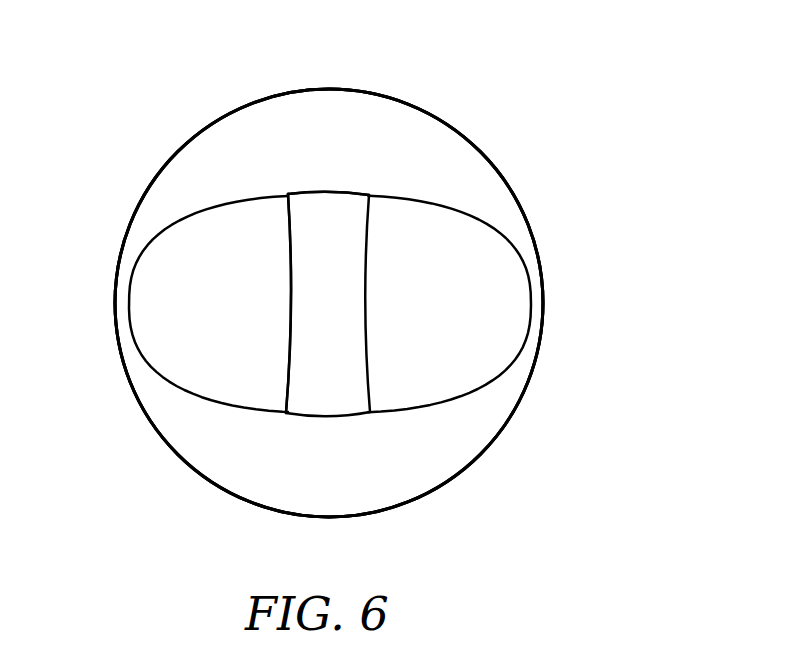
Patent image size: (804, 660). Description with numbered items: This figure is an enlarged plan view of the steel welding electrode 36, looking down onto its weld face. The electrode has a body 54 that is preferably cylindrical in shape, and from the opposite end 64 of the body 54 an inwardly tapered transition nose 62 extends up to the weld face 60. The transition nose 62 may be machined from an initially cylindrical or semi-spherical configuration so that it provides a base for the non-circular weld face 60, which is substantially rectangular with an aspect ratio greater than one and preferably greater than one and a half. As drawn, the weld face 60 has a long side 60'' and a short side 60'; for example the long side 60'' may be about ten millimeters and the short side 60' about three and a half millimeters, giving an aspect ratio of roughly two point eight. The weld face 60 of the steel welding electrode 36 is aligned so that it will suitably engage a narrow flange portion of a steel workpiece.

The steel welding electrode 36 is at (580, 339).
The body 54 is at (147, 188).
The opposite end 64 is at (213, 122).
The transition nose 62 is at (448, 252).
The weld face 60 is at (367, 231).
The short side 60' is at (298, 103).
The long side 60'' is at (238, 303).